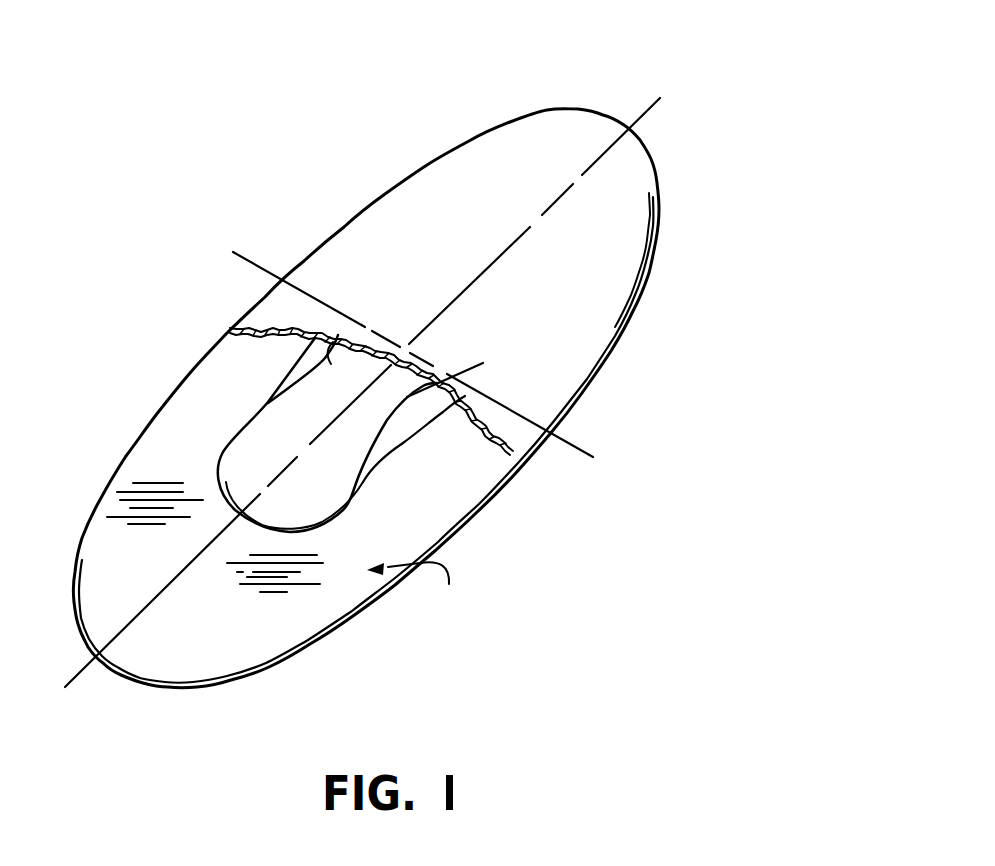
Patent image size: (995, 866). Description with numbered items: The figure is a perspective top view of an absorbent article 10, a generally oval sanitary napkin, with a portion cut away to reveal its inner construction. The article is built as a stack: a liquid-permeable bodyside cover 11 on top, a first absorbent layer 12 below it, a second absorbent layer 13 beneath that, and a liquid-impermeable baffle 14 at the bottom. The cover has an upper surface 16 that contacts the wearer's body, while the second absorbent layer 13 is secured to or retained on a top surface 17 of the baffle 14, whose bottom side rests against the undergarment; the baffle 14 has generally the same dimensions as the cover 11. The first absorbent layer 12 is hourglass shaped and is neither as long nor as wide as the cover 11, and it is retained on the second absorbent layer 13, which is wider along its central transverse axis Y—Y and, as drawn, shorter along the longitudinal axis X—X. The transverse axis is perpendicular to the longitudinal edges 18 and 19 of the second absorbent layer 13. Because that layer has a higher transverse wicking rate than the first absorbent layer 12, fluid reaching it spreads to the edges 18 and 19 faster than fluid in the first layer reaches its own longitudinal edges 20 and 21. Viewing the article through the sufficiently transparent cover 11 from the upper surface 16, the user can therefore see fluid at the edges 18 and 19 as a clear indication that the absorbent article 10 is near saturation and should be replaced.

The absorbent article 10 is at (324, 53).
The bodyside cover 11 is at (635, 199).
The first absorbent layer 12 is at (230, 450).
The second absorbent layer 13 is at (483, 363).
The liquid-impermeable baffle 14 is at (297, 630).
The upper surface 16 is at (486, 237).
The top surface 17 is at (417, 587).
The longitudinal edge 18 is at (410, 458).
The longitudinal edge 19 is at (298, 355).
The longitudinal edge 20 is at (407, 407).
The longitudinal edge 21 is at (345, 330).